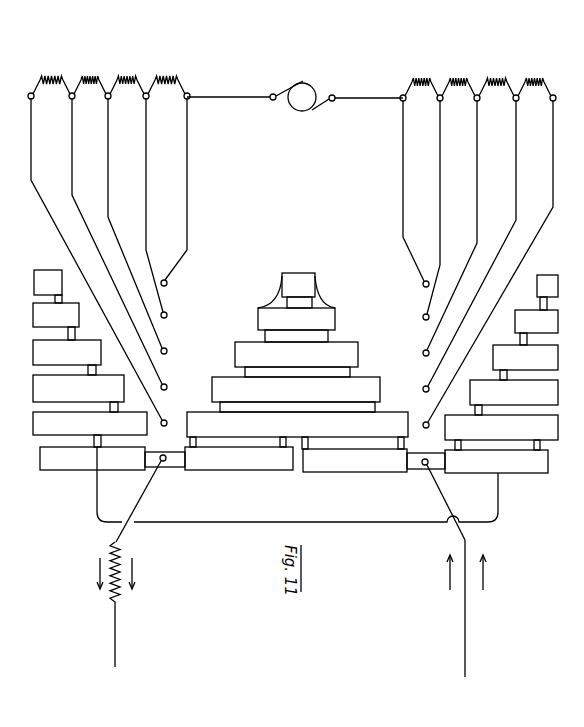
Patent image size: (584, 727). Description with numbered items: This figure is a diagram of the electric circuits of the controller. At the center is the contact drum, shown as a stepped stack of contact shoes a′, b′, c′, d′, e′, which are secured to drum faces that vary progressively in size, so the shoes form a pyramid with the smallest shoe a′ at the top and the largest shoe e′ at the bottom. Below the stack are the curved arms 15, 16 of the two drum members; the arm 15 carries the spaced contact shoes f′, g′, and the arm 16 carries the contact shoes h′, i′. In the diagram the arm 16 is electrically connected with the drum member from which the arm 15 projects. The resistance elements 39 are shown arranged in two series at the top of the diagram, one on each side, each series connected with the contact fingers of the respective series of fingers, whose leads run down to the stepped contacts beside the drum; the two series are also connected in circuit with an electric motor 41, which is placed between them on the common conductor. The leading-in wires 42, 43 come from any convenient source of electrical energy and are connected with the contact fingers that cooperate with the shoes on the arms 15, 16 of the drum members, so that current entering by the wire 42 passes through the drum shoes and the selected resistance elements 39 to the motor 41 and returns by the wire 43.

The resistance elements 39 is at (153, 73).
The electric motor 41 is at (302, 108).
The curved arm 15 is at (173, 467).
The curved arm 16 is at (417, 469).
The leading-in wire 42 is at (456, 571).
The leading-in wire 43 is at (123, 567).
The contact shoe a′ is at (296, 290).
The contact shoe b′ is at (296, 325).
The contact shoe c′ is at (296, 359).
The contact shoe d′ is at (296, 394).
The contact shoe e′ is at (297, 424).
The contact shoe f′ is at (363, 472).
The contact shoe g′ is at (523, 473).
The contact shoe h′ is at (248, 470).
The contact shoe i′ is at (65, 470).